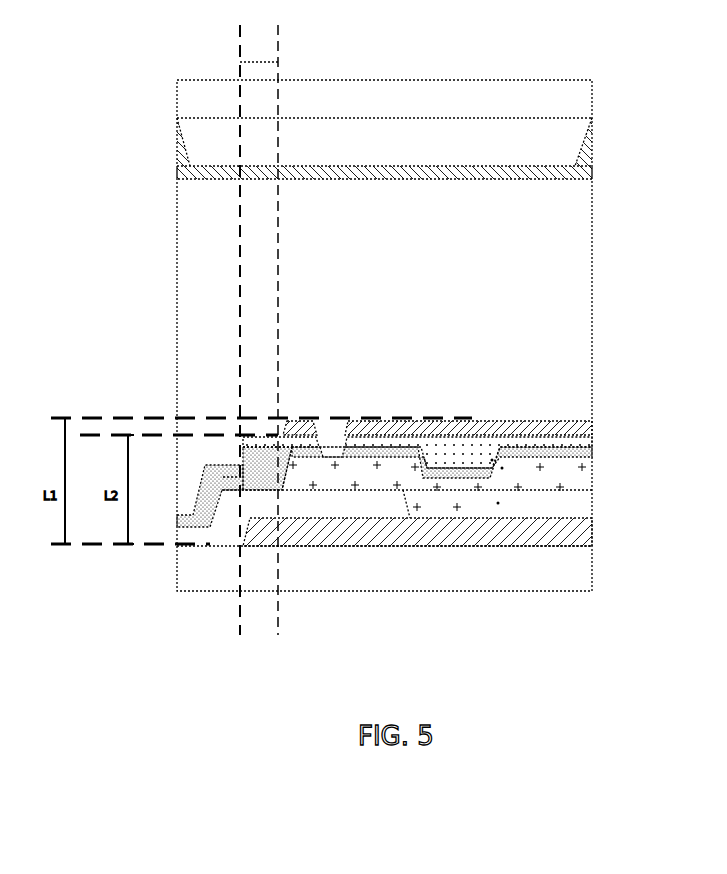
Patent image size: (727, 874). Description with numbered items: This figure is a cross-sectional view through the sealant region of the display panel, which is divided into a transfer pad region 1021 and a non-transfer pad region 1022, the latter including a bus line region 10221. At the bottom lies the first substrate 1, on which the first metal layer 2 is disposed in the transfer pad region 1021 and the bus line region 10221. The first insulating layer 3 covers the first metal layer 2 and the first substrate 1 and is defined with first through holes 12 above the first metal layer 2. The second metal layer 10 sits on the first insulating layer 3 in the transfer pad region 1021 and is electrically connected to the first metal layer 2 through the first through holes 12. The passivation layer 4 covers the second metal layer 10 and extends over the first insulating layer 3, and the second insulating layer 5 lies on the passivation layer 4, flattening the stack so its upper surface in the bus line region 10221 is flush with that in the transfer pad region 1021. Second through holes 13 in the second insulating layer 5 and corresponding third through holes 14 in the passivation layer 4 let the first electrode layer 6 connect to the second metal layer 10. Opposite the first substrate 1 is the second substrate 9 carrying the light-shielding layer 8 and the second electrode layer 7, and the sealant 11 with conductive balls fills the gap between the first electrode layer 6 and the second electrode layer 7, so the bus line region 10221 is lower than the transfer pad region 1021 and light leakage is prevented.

The first substrate 1 is at (592, 570).
The first metal layer 2 is at (592, 535).
The first insulating layer 3 is at (592, 505).
The passivation layer 4 is at (592, 455).
The second insulating layer 5 is at (592, 442).
The first electrode layer 6 is at (592, 428).
The second electrode layer 7 is at (592, 163).
The light-shielding layer 8 is at (565, 148).
The second substrate 9 is at (592, 100).
The second metal layer 10 is at (592, 478).
The sealant 11 is at (580, 268).
The first through hole 12 is at (498, 503).
The second through hole 13 is at (492, 460).
The third through hole 14 is at (502, 468).
The transfer pad region 1021 is at (592, 33).
The non-transfer pad region 1022 is at (278, 33).
The bus line region 10221 is at (278, 68).